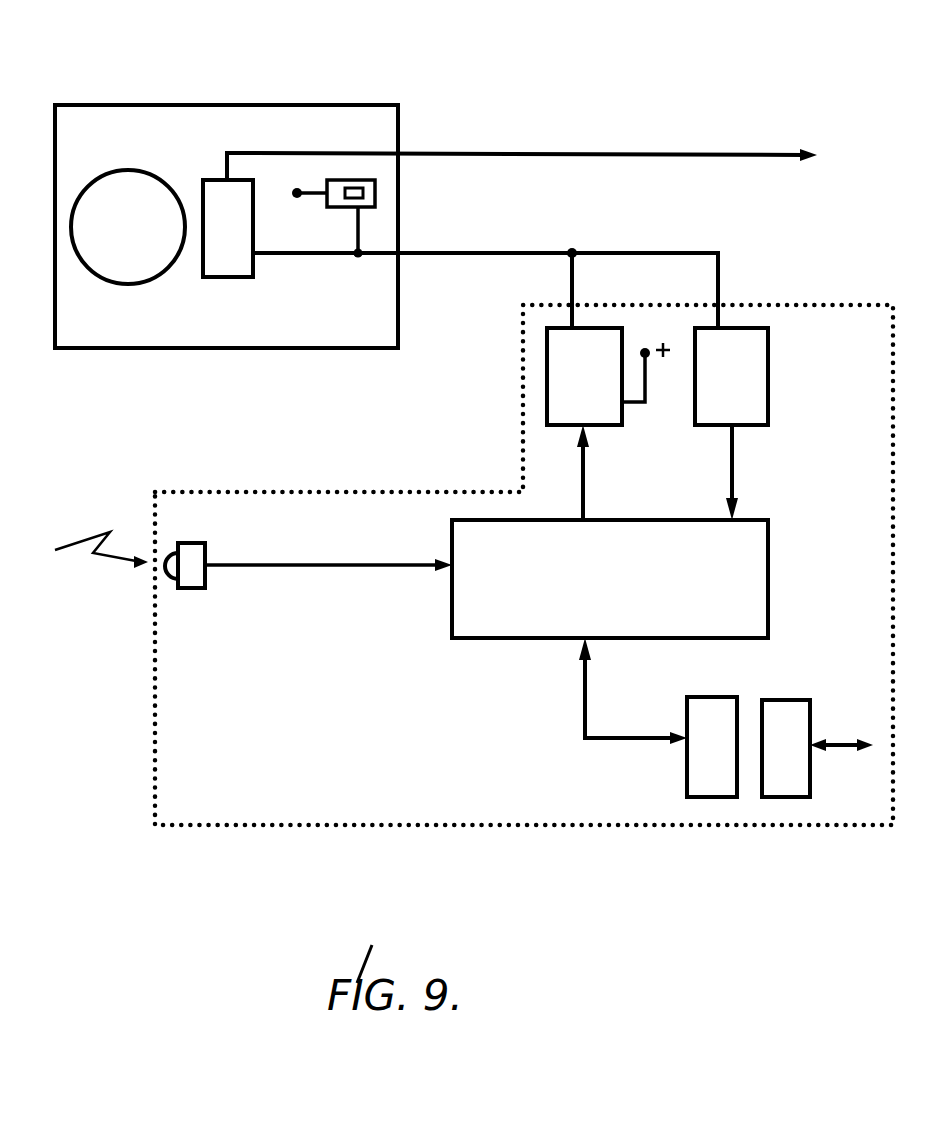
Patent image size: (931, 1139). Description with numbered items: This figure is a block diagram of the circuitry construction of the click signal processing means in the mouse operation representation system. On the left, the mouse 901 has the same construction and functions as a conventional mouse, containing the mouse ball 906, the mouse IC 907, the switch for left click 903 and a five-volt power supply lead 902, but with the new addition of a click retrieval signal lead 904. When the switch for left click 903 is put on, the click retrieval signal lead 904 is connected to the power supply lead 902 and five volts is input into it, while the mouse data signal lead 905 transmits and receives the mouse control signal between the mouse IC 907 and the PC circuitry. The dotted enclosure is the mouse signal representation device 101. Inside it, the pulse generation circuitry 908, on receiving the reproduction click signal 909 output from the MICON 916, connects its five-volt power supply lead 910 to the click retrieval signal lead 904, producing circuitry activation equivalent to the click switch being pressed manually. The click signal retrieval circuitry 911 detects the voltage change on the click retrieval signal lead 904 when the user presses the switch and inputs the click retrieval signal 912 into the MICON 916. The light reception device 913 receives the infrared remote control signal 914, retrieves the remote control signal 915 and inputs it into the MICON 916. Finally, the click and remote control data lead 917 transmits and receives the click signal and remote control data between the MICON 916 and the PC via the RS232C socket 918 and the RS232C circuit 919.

The mouse signal representation device 101 is at (255, 822).
The mouse 901 is at (275, 105).
The +5V power supply lead 902 is at (297, 193).
The switch for left click 903 is at (373, 187).
The click retrieval signal lead 904 is at (497, 253).
The mouse data signal lead 905 is at (668, 155).
The mouse ball 906 is at (128, 272).
The mouse IC 907 is at (227, 263).
The pulse generation circuitry 908 is at (552, 353).
The reproduction click signal 909 is at (587, 487).
The +5V power supply lead 910 is at (645, 353).
The click signal retrieval circuitry 911 is at (758, 337).
The click retrieval signal 912 is at (737, 475).
The light reception device 913 is at (192, 577).
The infrared remote control signal 914 is at (75, 545).
The remote control signal 915 is at (293, 567).
The MICON 916 is at (497, 638).
The click and remote control data lead 917 is at (613, 743).
The RS232C socket 918 is at (782, 783).
The RS232C circuit 919 is at (842, 745).